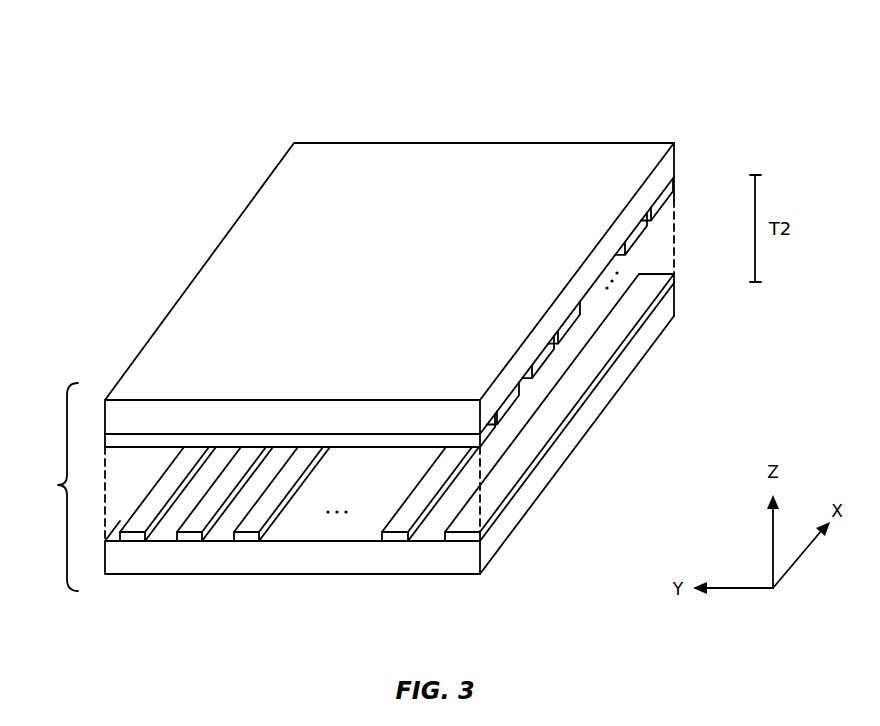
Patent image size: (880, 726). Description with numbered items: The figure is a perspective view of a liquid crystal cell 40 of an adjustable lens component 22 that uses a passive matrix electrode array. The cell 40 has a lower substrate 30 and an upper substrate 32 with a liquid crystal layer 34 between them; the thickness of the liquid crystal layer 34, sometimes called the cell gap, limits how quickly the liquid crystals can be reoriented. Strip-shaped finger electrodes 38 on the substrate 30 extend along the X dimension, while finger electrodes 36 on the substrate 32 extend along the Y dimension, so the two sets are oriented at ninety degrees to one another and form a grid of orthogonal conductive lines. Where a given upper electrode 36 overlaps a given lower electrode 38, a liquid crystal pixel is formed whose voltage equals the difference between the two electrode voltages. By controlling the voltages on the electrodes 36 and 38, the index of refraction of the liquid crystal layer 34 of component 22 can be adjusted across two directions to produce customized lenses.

The adjustable lens component 22 is at (560, 78).
The substrate 30 is at (384, 563).
The substrate 32 is at (380, 157).
The liquid crystal layer 34 is at (670, 248).
The finger electrodes 36 is at (552, 350).
The finger electrodes 38 is at (200, 541).
The liquid crystal cell 40 is at (52, 487).